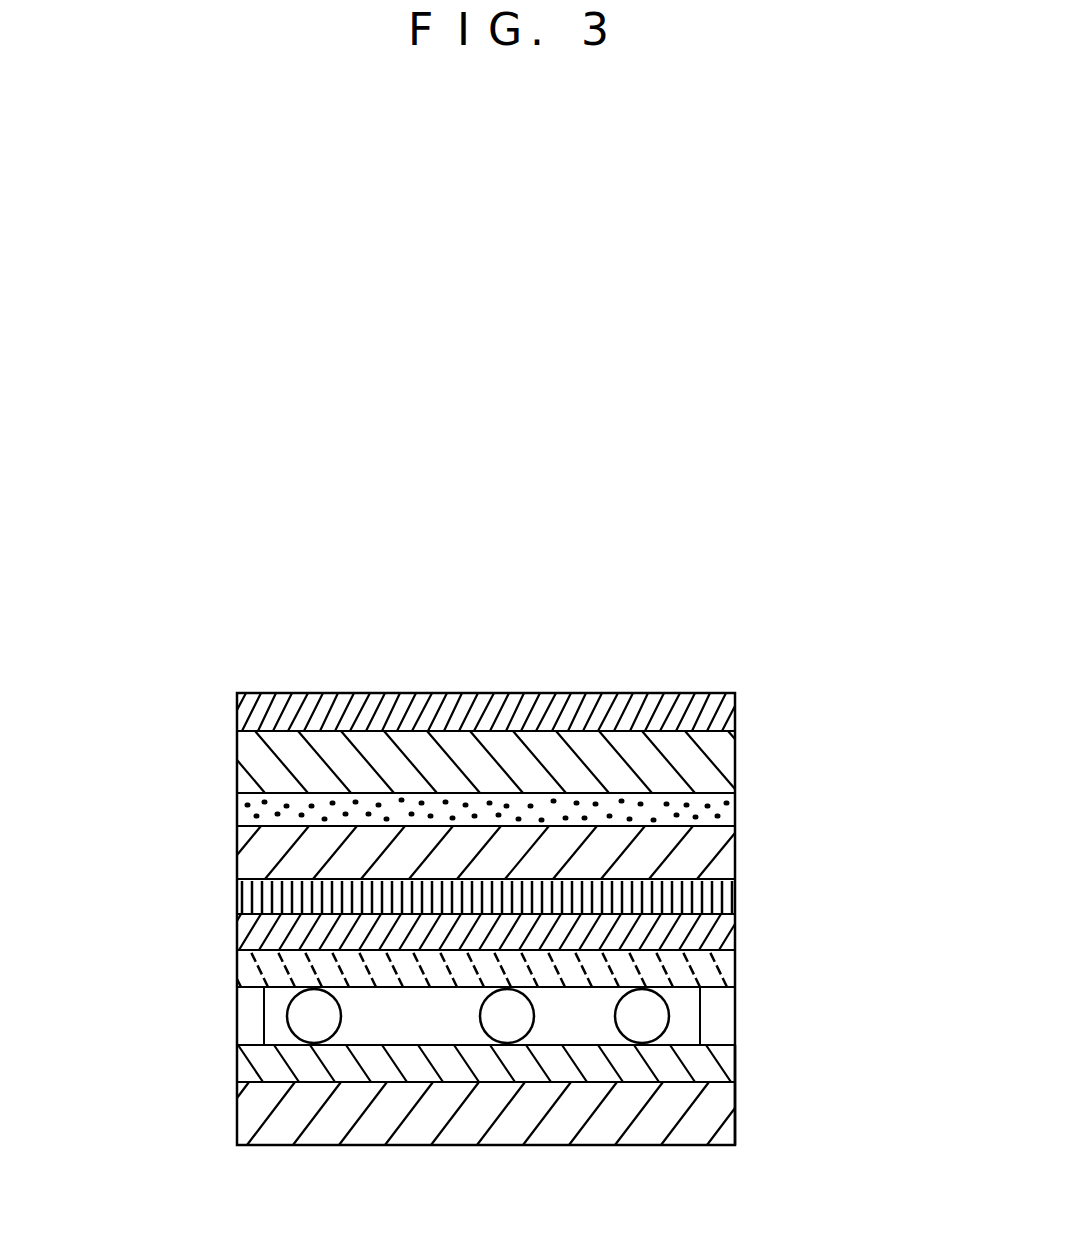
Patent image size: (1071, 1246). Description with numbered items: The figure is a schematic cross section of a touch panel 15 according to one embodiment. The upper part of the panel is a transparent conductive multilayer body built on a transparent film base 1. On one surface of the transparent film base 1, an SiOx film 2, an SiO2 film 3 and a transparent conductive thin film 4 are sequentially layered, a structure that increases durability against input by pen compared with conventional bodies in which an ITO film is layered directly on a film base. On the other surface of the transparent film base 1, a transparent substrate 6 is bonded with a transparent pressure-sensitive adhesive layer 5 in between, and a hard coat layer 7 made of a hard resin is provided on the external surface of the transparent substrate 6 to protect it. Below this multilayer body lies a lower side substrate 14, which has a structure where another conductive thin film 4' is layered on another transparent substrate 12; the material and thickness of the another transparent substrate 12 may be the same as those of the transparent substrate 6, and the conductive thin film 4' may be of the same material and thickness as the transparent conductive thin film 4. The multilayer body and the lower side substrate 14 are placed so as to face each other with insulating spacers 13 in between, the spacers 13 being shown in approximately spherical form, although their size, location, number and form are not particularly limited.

The transparent film base 1 is at (735, 848).
The SiOx film 2 is at (735, 892).
The SiO2 film 3 is at (735, 923).
The transparent conductive thin film 4 is at (540, 961).
The conductive thin film 4' is at (547, 1084).
The transparent pressure-sensitive adhesive layer 5 is at (735, 803).
The transparent substrate 6 is at (735, 757).
The hard coat layer 7 is at (735, 708).
The another transparent substrate 12 is at (735, 1120).
The spacers 13 is at (657, 1010).
The lower side substrate 14 is at (864, 1059).
The touch panel 15 is at (200, 672).